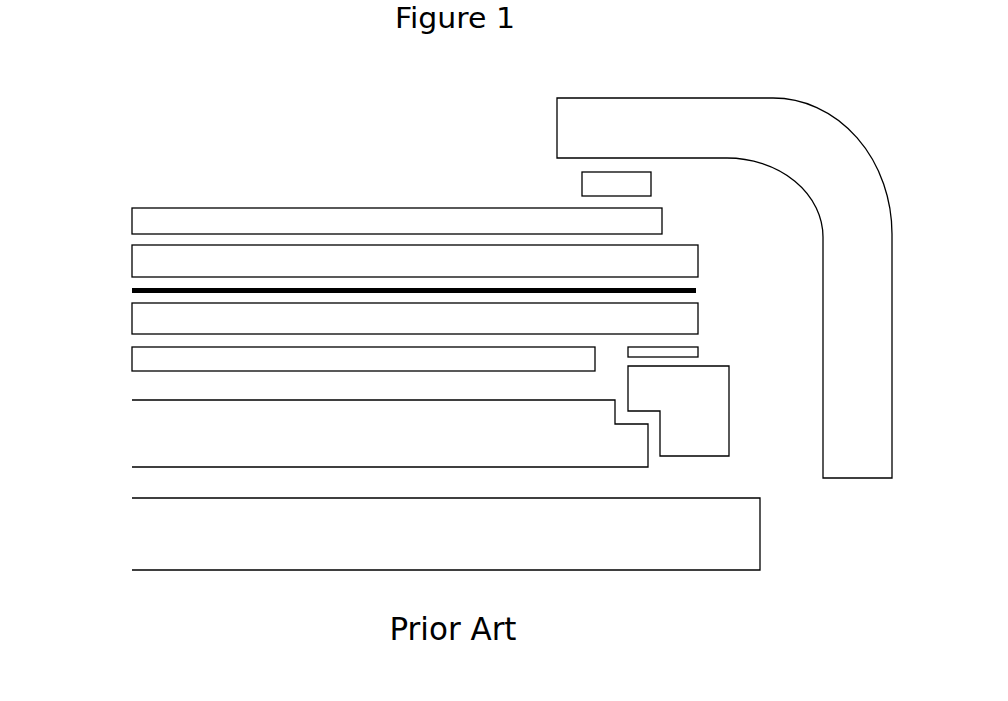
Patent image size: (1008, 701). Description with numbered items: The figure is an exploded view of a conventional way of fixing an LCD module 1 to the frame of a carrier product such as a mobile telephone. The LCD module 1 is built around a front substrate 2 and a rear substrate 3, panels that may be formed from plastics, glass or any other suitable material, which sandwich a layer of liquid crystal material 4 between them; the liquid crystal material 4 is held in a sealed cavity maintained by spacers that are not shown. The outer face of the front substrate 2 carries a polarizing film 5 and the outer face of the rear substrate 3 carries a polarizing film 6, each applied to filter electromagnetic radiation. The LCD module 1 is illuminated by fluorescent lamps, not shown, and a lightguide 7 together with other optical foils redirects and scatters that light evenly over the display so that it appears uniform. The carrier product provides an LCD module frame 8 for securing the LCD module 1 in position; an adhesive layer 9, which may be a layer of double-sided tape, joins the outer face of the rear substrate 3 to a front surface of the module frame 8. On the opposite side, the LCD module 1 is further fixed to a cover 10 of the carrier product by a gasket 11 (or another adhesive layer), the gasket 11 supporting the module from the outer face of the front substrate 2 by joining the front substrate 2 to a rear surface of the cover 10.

The LCD module 1 is at (250, 127).
The front substrate 2 is at (415, 261).
The rear substrate 3 is at (415, 318).
The layer of liquid crystal material 4 is at (114, 291).
The polarizing film 5 is at (397, 221).
The polarizing film 6 is at (363, 359).
The lightguide 7 is at (390, 433).
The LCD module frame 8 is at (678, 411).
The adhesive layer 9 is at (719, 352).
The cover 10 is at (724, 288).
The gasket 11 is at (616, 184).